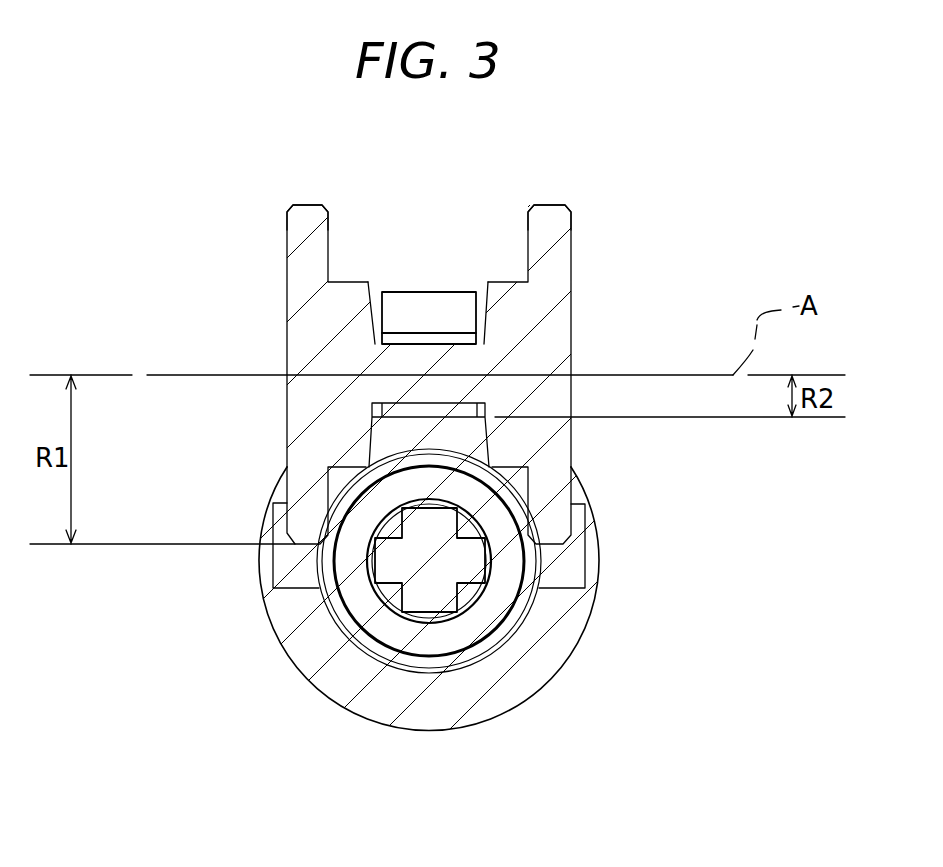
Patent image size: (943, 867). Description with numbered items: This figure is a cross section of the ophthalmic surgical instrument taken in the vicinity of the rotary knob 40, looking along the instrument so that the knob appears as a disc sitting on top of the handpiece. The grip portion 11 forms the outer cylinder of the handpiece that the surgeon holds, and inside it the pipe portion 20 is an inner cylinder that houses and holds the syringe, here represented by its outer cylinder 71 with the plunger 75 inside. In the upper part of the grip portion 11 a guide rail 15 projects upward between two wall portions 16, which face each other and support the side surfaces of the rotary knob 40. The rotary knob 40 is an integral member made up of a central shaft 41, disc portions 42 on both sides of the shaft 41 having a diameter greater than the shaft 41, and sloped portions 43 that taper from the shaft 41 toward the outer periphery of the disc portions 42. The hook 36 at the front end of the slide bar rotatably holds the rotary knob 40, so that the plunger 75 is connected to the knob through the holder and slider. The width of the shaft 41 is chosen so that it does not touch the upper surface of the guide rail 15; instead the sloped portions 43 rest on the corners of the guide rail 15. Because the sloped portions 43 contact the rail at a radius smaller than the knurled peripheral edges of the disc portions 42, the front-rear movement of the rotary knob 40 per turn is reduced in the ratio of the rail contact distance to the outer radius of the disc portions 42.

The grip portion 11 is at (486, 724).
The guide rail 15 is at (488, 440).
The wall portions 16 is at (273, 533).
The pipe portion 20 is at (538, 578).
The hook 36 is at (458, 300).
The rotary knob 40 is at (588, 218).
The shaft 41 is at (413, 343).
The disc portions 42 is at (302, 205).
The sloped portions 43 is at (371, 313).
The outer cylinder 71 is at (492, 625).
The plunger 75 is at (537, 557).